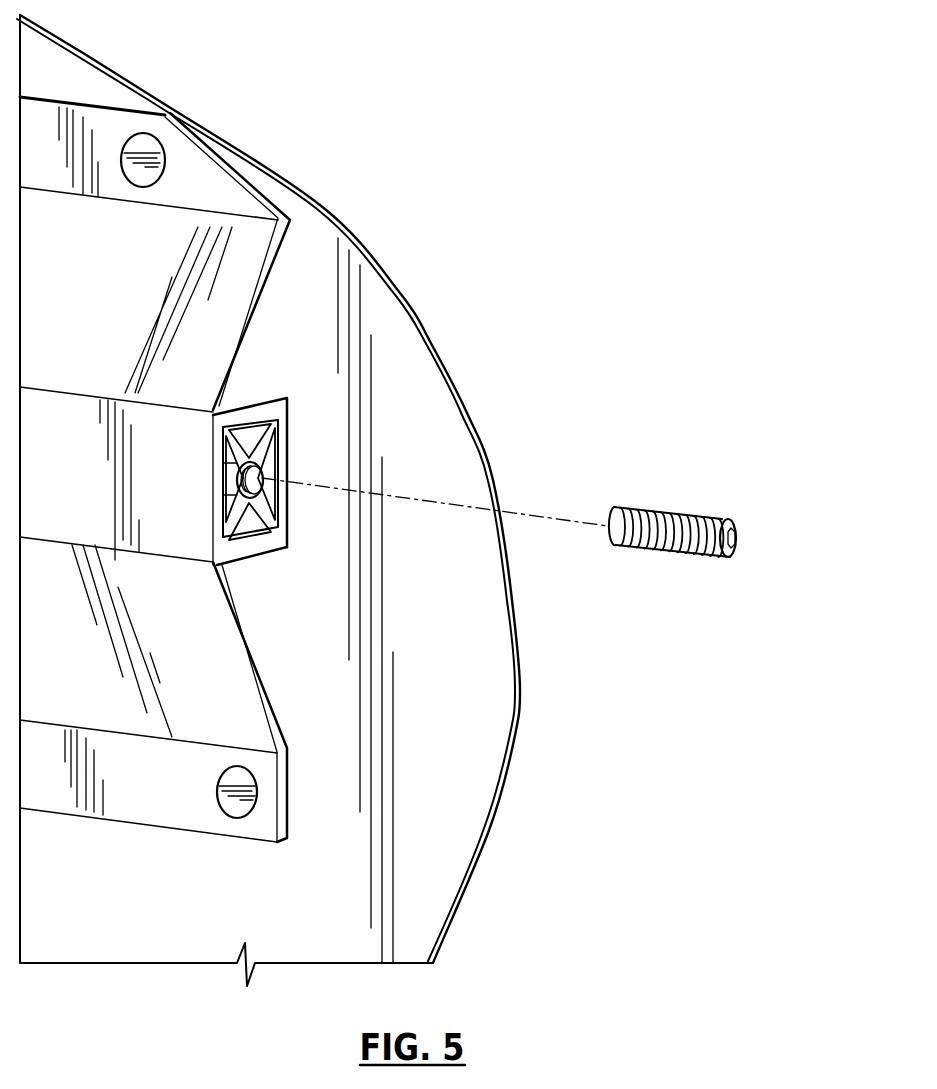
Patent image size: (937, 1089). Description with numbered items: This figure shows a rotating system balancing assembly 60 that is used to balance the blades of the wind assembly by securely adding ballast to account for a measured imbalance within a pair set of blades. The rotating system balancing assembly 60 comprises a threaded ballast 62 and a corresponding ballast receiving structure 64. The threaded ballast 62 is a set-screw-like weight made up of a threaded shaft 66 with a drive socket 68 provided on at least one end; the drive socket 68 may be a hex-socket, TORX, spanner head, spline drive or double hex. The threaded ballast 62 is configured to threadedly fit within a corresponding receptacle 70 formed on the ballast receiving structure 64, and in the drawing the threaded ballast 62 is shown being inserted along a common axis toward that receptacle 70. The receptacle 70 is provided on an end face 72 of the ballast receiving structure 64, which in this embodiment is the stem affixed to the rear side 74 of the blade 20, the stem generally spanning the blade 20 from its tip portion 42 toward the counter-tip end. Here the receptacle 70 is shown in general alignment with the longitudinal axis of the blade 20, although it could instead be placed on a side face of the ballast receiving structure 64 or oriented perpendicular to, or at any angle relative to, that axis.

The blade 20 is at (391, 318).
The tip portion 42 is at (484, 745).
The rotating system balancing assembly 60 is at (560, 383).
The threaded ballast 62 is at (662, 512).
The ballast receiving structure 64 is at (248, 405).
The threaded shaft 66 is at (638, 547).
The drive socket 68 is at (745, 538).
The receptacle 70 is at (262, 478).
The end face 72 is at (260, 550).
The rear side 74 is at (448, 714).